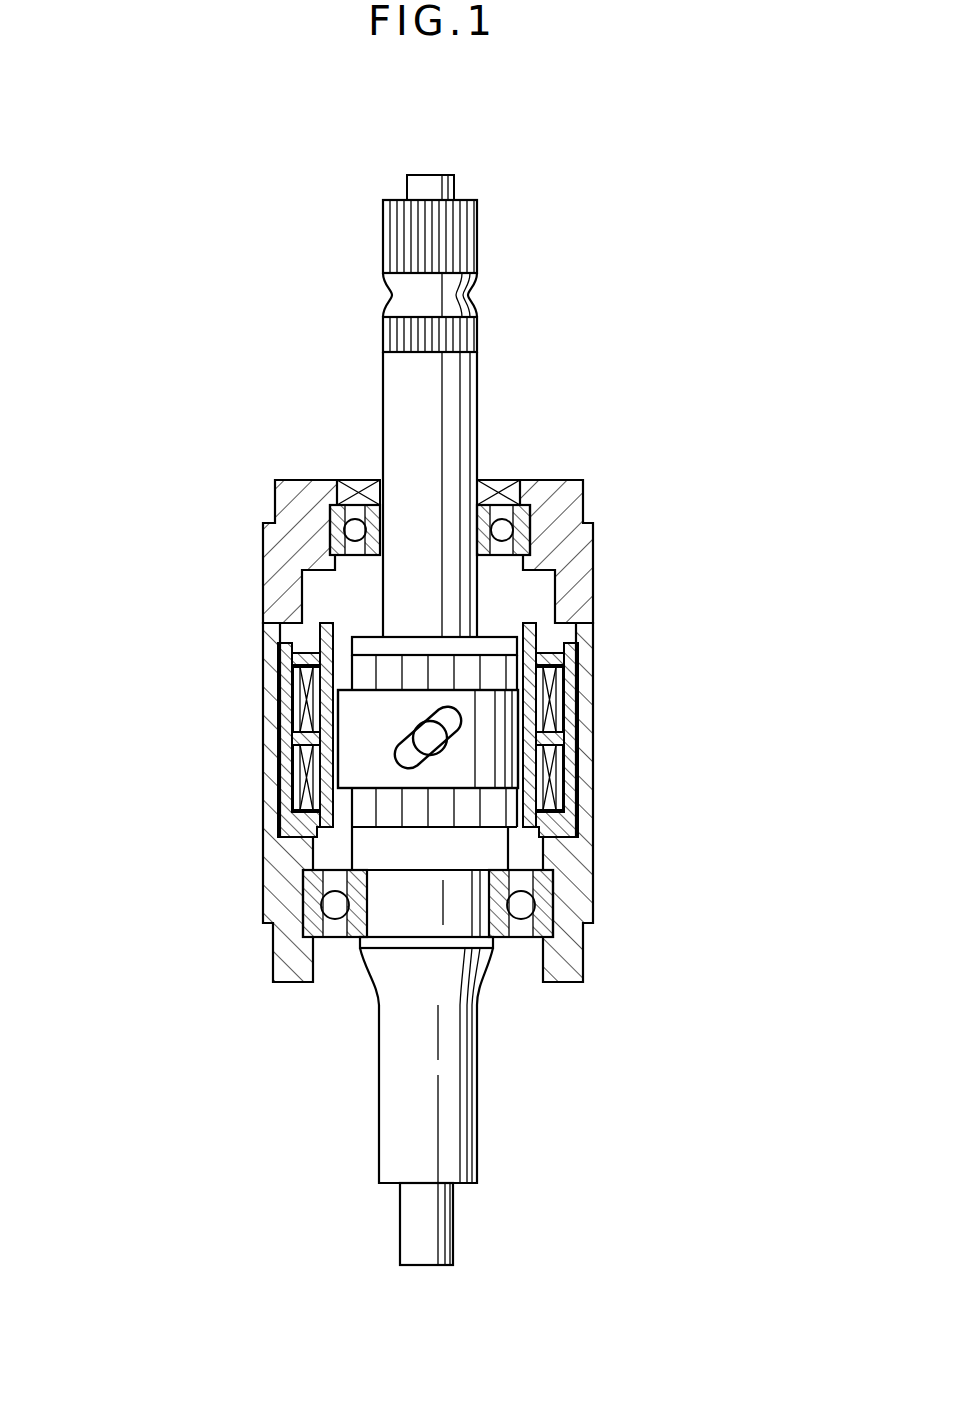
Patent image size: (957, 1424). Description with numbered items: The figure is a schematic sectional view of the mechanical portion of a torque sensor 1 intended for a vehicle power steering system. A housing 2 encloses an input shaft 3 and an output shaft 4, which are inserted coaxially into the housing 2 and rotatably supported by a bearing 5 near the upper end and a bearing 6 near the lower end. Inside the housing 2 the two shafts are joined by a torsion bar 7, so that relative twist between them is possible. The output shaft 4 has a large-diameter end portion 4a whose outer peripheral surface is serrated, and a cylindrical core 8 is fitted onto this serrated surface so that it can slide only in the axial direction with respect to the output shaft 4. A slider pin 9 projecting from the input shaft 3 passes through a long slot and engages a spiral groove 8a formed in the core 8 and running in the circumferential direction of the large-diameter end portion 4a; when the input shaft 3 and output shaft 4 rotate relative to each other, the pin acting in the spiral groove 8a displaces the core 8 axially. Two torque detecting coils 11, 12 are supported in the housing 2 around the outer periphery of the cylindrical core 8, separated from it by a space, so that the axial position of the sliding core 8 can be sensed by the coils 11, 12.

The torque sensor 1 is at (217, 252).
The housing 2 is at (262, 568).
The input shaft 3 is at (468, 400).
The output shaft 4 is at (467, 1085).
The large-diameter end portion 4a is at (470, 665).
The bearing 5 is at (352, 502).
The bearing 6 is at (336, 925).
The torsion bar 7 is at (457, 190).
The cylindrical core 8 is at (357, 725).
The spiral groove 8a is at (407, 765).
The slider pin 9 is at (432, 745).
The torque detecting coil 11 is at (558, 700).
The torque detecting coil 12 is at (558, 780).